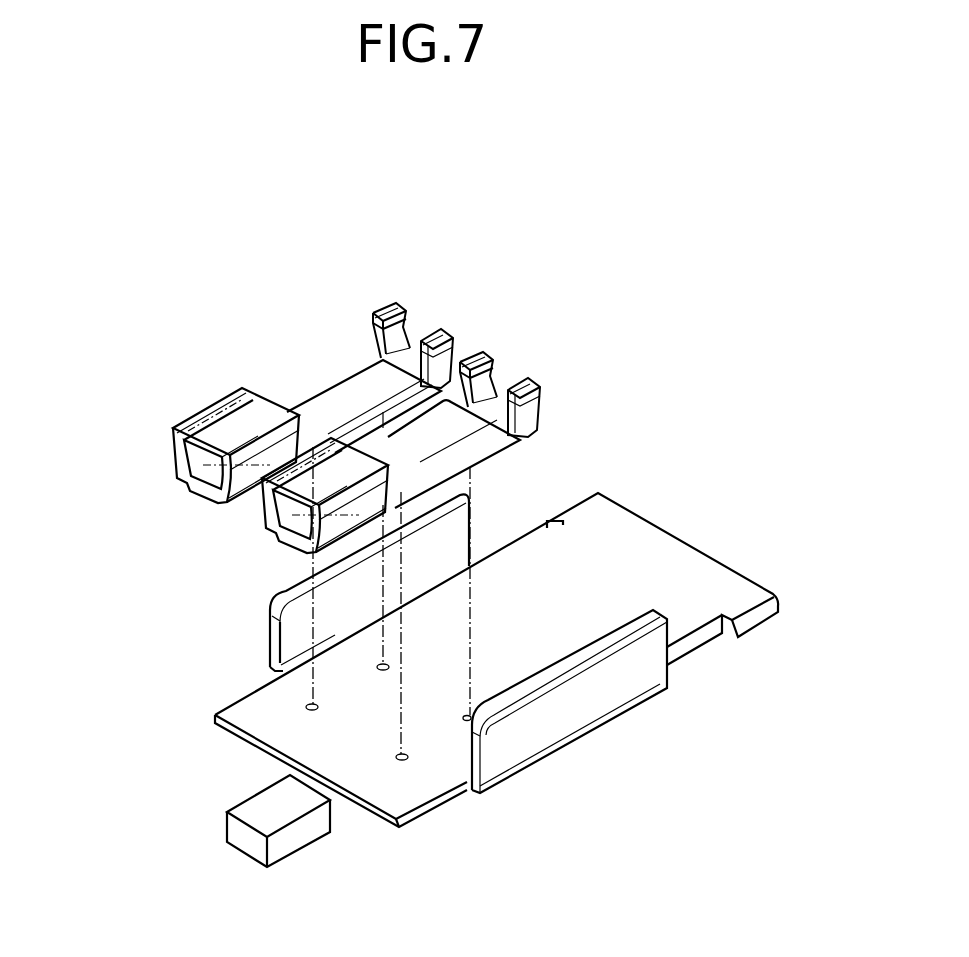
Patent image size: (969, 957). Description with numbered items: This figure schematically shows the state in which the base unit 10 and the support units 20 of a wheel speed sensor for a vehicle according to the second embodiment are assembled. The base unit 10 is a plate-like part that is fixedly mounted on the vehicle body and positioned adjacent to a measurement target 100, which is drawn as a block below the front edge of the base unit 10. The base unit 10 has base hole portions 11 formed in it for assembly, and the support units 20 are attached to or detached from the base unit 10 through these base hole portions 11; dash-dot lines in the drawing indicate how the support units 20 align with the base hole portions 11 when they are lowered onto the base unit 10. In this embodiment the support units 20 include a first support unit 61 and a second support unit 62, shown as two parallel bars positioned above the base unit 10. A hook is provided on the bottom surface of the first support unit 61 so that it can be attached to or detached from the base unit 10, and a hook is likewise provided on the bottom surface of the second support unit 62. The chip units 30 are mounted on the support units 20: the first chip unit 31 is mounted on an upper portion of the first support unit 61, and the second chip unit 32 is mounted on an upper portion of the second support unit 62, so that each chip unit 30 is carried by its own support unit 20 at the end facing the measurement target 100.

The base unit 10 is at (687, 535).
The base hole portions 11 is at (404, 758).
The support units 20 is at (413, 343).
The chip units 30 is at (209, 465).
The first chip unit 31 is at (245, 392).
The second chip unit 32 is at (244, 495).
The first support unit 61 is at (367, 392).
The second support unit 62 is at (440, 453).
The measurement target 100 is at (243, 852).